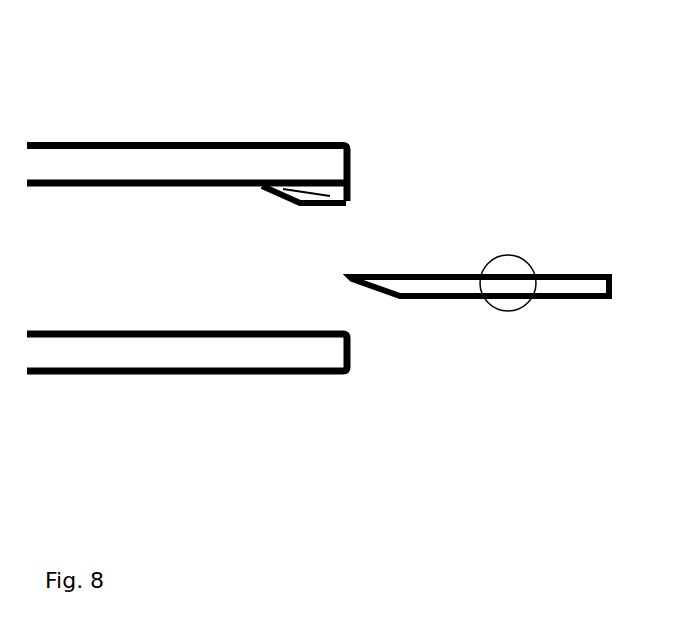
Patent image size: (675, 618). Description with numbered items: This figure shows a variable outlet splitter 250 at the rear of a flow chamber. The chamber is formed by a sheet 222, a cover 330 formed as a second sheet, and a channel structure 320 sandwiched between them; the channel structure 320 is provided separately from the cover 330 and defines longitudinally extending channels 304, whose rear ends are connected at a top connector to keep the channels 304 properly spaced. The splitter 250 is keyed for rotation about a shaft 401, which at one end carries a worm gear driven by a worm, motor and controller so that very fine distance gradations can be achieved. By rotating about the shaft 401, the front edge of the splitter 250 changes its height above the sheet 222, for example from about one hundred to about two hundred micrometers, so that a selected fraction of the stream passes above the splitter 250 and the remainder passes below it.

The channels 304 is at (242, 234).
The cover 330 is at (242, 114).
The channel structure 320 is at (353, 180).
The sheet 222 is at (160, 350).
The splitter 250 is at (440, 298).
The shaft 401 is at (497, 310).